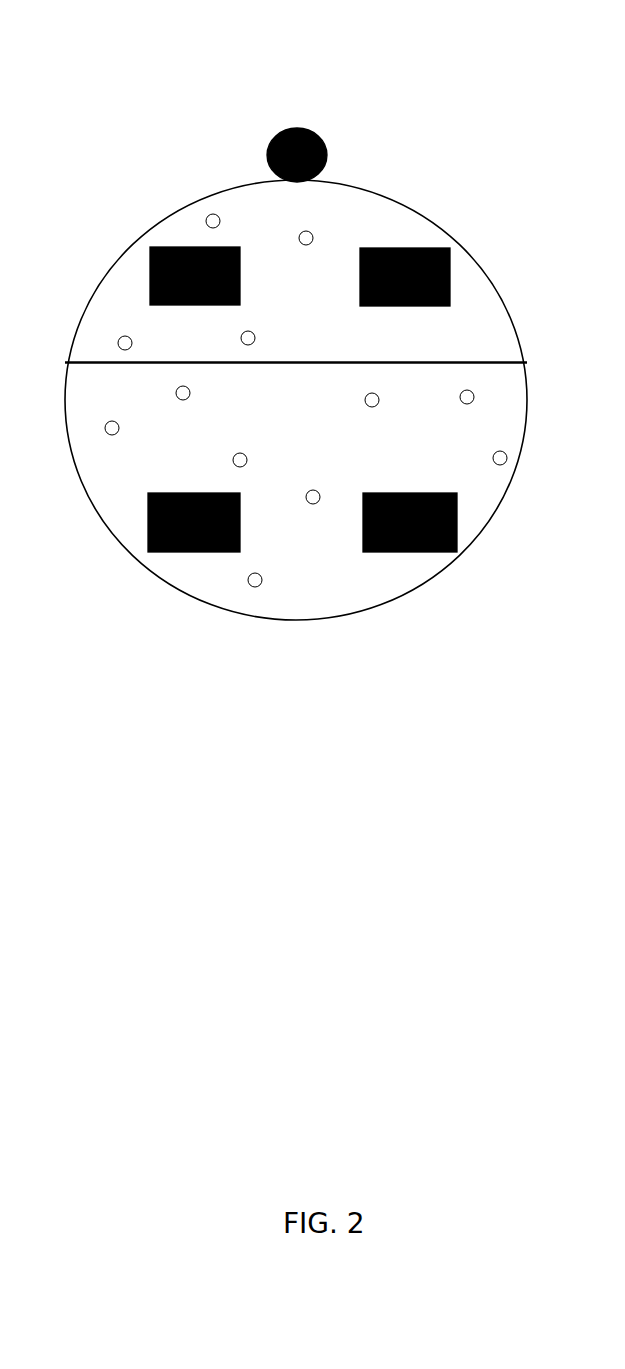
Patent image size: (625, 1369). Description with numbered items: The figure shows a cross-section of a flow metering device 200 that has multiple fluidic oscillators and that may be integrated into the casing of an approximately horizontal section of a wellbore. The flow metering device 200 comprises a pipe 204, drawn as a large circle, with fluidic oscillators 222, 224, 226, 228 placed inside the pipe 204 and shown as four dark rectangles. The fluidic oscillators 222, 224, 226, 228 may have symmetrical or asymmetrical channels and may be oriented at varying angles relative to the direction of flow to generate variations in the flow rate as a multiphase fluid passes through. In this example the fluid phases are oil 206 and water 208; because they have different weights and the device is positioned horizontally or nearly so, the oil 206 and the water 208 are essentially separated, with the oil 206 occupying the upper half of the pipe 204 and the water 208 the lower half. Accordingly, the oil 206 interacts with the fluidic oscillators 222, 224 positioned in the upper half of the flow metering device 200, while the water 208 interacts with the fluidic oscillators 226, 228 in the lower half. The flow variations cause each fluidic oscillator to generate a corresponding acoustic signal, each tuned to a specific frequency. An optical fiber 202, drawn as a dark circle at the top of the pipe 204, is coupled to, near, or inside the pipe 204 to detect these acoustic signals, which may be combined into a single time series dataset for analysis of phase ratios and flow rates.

The flow metering device 200 is at (132, 88).
The optical fiber 202 is at (273, 139).
The pipe 204 is at (166, 222).
The oil 206 is at (324, 354).
The water 208 is at (324, 390).
The fluidic oscillator 222 is at (149, 278).
The fluidic oscillator 224 is at (450, 256).
The fluidic oscillator 226 is at (148, 522).
The fluidic oscillator 228 is at (457, 515).